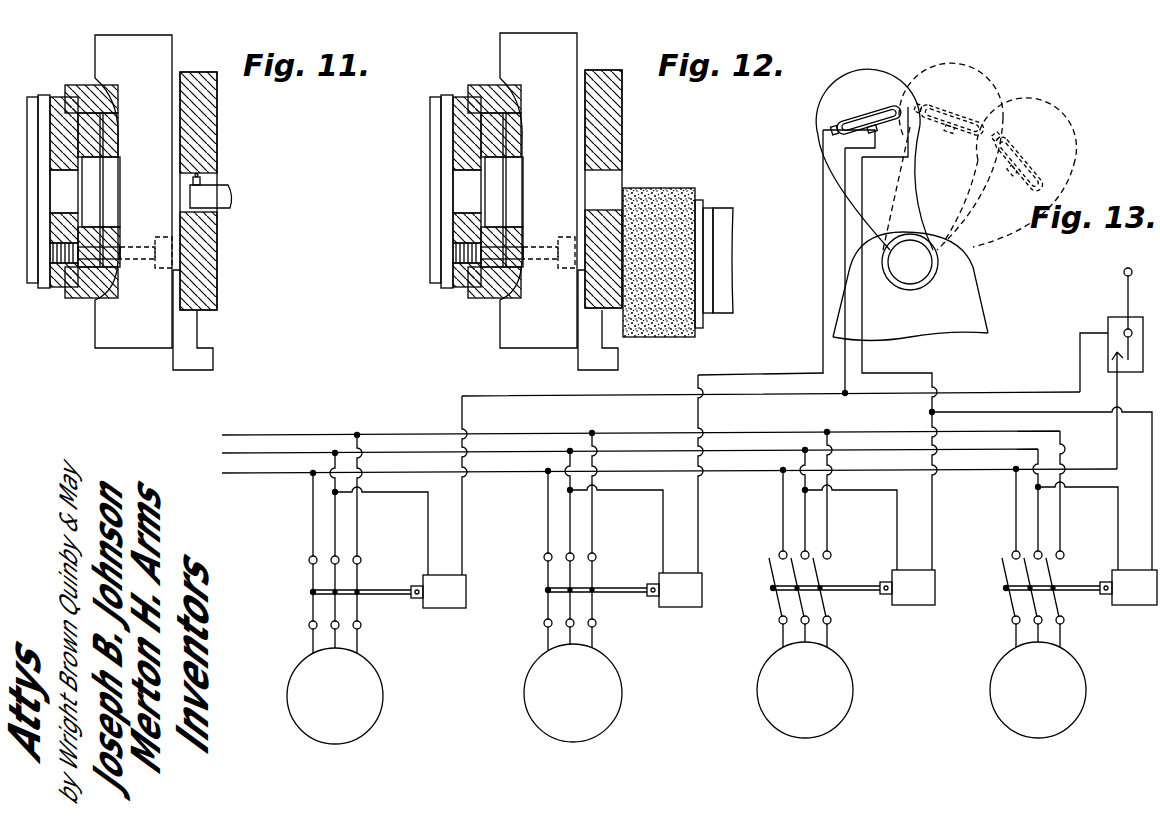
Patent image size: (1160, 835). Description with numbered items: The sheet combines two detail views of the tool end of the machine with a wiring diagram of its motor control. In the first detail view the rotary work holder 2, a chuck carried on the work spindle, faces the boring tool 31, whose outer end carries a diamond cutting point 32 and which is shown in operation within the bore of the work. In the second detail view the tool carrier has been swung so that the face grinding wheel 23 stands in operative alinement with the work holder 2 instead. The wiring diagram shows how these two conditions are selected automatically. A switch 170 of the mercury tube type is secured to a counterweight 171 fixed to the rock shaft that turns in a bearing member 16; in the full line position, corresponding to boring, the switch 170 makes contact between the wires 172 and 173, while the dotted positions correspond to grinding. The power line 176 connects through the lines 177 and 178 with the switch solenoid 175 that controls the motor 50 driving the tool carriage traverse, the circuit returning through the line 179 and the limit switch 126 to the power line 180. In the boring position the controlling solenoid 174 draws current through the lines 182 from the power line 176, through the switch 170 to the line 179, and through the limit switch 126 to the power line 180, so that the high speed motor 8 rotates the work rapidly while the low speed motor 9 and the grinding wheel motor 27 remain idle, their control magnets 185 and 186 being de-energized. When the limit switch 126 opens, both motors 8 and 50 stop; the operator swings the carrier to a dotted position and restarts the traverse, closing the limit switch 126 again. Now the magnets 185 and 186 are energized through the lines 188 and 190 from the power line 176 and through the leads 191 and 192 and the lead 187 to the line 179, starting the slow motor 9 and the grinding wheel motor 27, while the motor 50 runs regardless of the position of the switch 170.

In FIG. 11, the rotary work holder 2 is at (143, 340).
In FIG. 12, the rotary work holder 2 is at (540, 338).
In FIG. 11, the boring tool 31 is at (228, 206).
In FIG. 11, the diamond cutting point 32 is at (200, 178).
In FIG. 12, the face grinding wheel 23 is at (665, 188).
In FIG. 13, the mercury switch 170 is at (868, 114).
In FIG. 13, the counterweight 171 is at (826, 115).
In FIG. 13, the wire 172 is at (823, 268).
In FIG. 13, the wire 173 is at (845, 230).
In FIG. 13, the bearing member 16 is at (975, 312).
In FIG. 13, the limit switch 126 is at (1118, 325).
In FIG. 13, the lead 187 is at (912, 375).
In FIG. 13, the power line 176 is at (222, 452).
In FIG. 13, the line 177 is at (335, 468).
In FIG. 13, the power line 180 is at (252, 475).
In FIG. 13, the line 178 is at (398, 493).
In FIG. 13, the line 179 is at (463, 529).
In FIG. 13, the lines 182 is at (650, 491).
In FIG. 13, the line 188 is at (874, 492).
In FIG. 13, the line 190 is at (1097, 490).
In FIG. 13, the lead 191 is at (935, 523).
In FIG. 13, the lead 192 is at (1152, 490).
In FIG. 13, the controlling solenoid 174 is at (623, 590).
In FIG. 13, the switch solenoid 175 is at (387, 592).
In FIG. 13, the control magnet 185 is at (852, 587).
In FIG. 13, the control magnet 186 is at (1079, 587).
In FIG. 13, the motor 50 is at (335, 686).
In FIG. 13, the high speed motor 8 is at (573, 684).
In FIG. 13, the low speed motor 9 is at (805, 681).
In FIG. 13, the grinding wheel motor 27 is at (1038, 681).